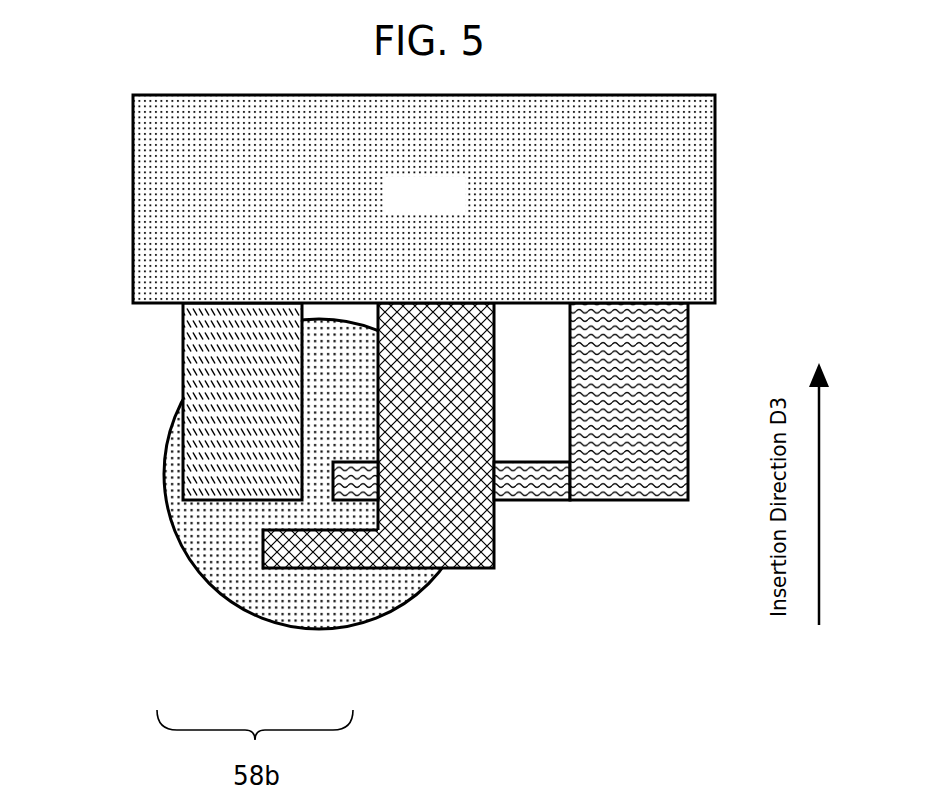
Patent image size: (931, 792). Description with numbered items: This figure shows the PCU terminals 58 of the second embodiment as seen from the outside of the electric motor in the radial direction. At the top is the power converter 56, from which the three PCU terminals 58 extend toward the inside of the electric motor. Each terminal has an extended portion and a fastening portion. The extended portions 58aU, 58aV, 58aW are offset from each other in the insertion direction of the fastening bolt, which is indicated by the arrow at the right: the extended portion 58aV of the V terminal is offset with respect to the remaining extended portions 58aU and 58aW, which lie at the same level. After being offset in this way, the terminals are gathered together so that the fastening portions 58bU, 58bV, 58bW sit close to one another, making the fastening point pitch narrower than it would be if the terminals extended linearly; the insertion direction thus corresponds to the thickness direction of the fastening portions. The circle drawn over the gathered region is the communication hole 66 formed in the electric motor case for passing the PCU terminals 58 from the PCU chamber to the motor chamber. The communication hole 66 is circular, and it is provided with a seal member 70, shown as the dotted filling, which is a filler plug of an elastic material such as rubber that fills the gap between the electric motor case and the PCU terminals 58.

The power converter (PCU) 56 is at (735, 130).
The PCU terminals 58 is at (430, 503).
The extended portion of the U-phase PCU terminal 58aU is at (215, 372).
The extended portion of the V-phase PCU terminal 58aV is at (470, 541).
The extended portion of the W-phase PCU terminal 58aW is at (630, 483).
The fastening portion of the U-phase PCU terminal 58bU is at (203, 468).
The fastening portion of the V-phase PCU terminal 58bV is at (293, 552).
The fastening portion of the W-phase PCU terminal 58bW is at (358, 482).
The communication hole 66 is at (397, 603).
The seal member 70 is at (222, 568).